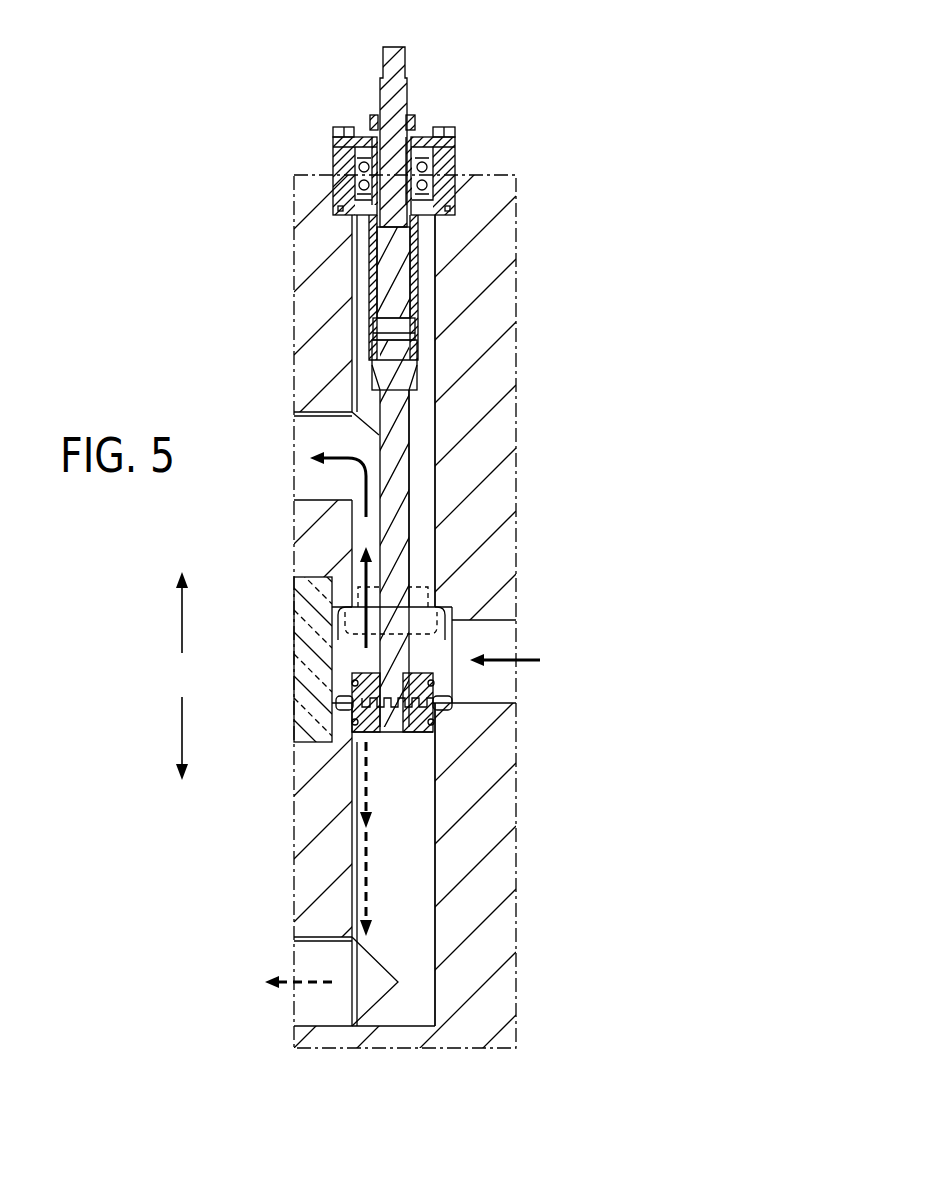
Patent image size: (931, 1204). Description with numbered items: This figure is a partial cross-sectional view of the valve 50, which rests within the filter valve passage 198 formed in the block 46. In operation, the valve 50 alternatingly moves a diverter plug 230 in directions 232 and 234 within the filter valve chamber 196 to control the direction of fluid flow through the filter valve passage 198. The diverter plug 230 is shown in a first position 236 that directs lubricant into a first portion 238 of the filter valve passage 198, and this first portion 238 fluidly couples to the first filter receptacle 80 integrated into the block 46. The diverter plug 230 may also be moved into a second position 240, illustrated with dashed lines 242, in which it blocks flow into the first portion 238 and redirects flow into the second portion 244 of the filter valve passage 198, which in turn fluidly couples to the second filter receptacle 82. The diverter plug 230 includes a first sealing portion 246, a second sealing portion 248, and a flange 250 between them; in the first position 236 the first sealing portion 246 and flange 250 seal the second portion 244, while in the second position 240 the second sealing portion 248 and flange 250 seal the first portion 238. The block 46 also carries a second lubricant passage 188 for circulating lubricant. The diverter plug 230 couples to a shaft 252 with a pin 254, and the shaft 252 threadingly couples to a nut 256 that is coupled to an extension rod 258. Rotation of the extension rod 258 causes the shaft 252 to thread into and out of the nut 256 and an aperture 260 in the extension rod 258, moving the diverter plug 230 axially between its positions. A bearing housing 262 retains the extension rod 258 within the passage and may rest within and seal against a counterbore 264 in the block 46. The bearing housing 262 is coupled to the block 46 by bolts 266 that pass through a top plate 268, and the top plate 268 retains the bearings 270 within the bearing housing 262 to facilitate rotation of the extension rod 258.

The block 46 is at (95, 272).
The valve 50 is at (238, 104).
The first filter receptacle 80 is at (307, 480).
The second filter receptacle 82 is at (312, 968).
The second lubricant passage 188 is at (452, 703).
The filter valve chamber 196 is at (447, 610).
The filter valve passage 198 is at (437, 525).
The diverter plug 230 is at (356, 732).
The direction 232 is at (181, 728).
The direction 234 is at (181, 617).
The first position 236 is at (556, 823).
The first portion 238 is at (420, 475).
The second position 240 is at (250, 585).
The dashed lines 242 is at (335, 632).
The second portion 244 is at (372, 852).
The first sealing portion 246 is at (408, 723).
The second sealing portion 248 is at (420, 667).
The flange 250 is at (440, 708).
The shaft 252 is at (393, 432).
The pin 254 is at (338, 703).
The nut 256 is at (370, 373).
The extension rod 258 is at (415, 298).
The aperture 260 is at (395, 268).
The bearing housing 262 is at (335, 173).
The counterbore 264 is at (455, 203).
The bolts 266 is at (442, 127).
The top plate 268 is at (333, 143).
The bearings 270 is at (420, 180).